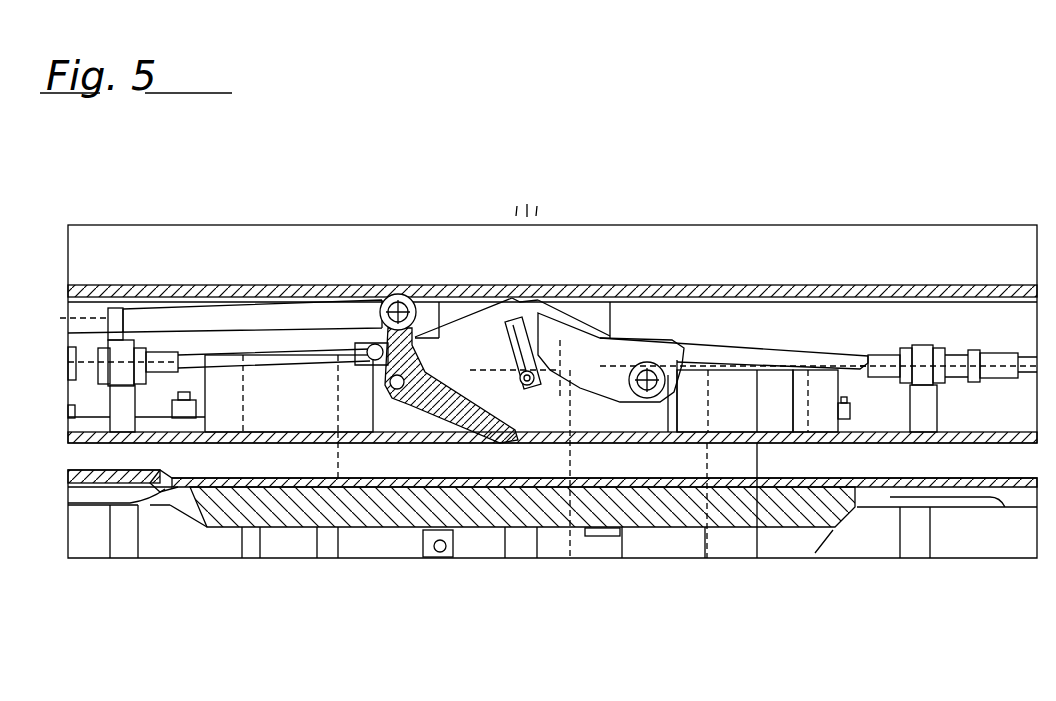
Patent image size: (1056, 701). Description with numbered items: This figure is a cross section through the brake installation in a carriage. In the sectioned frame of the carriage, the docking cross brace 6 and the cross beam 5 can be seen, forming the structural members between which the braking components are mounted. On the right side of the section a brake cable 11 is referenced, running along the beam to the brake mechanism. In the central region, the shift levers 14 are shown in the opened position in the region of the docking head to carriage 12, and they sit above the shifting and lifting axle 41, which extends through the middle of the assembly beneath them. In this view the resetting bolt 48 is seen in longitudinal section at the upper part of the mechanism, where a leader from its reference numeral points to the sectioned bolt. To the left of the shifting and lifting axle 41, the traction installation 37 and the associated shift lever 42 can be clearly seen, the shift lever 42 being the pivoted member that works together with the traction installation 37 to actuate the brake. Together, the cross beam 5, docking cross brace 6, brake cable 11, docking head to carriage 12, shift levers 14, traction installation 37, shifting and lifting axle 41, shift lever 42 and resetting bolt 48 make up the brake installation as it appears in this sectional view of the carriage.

The cross beam 5 is at (937, 432).
The docking cross brace 6 is at (230, 408).
The brake cable 11 is at (790, 362).
The docking head to carriage 12 is at (603, 415).
The shift levers 14 is at (512, 345).
The traction installation 37 is at (292, 318).
The shifting and lifting axle 41 is at (593, 373).
The shift lever 42 is at (457, 395).
The resetting bolt 48 is at (520, 302).